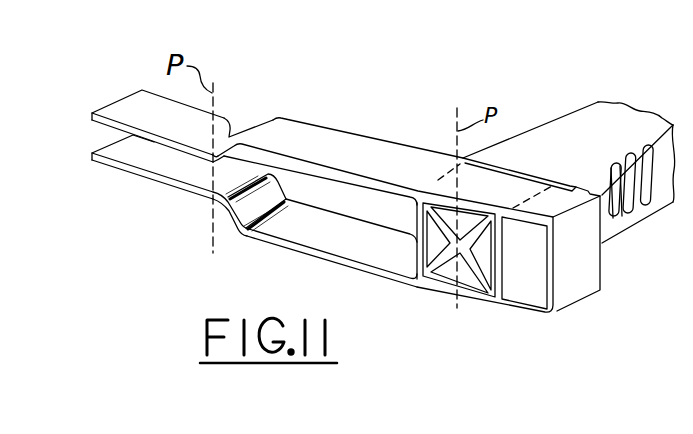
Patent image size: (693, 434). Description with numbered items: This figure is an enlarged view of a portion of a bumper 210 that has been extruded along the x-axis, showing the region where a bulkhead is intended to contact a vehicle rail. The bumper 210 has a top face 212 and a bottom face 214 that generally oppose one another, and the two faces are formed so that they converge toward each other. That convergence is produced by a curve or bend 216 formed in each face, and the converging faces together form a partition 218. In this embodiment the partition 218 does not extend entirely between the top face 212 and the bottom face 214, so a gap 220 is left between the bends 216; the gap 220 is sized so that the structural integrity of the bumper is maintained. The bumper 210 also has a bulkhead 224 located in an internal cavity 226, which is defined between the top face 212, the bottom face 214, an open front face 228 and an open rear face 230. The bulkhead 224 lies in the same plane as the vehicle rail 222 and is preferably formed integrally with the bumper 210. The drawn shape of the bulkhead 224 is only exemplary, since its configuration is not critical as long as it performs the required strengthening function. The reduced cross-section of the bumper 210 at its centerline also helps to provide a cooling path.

The bumper 210 is at (394, 70).
The top face 212 is at (385, 152).
The bottom face 214 is at (244, 237).
The bend 216 is at (228, 137).
The partition 218 is at (210, 197).
The gap 220 is at (206, 175).
The vehicle rail 222 is at (592, 118).
The bulkhead 224 is at (433, 278).
The internal cavity 226 is at (487, 264).
The open front face 228 is at (321, 242).
The open rear face 230 is at (317, 124).